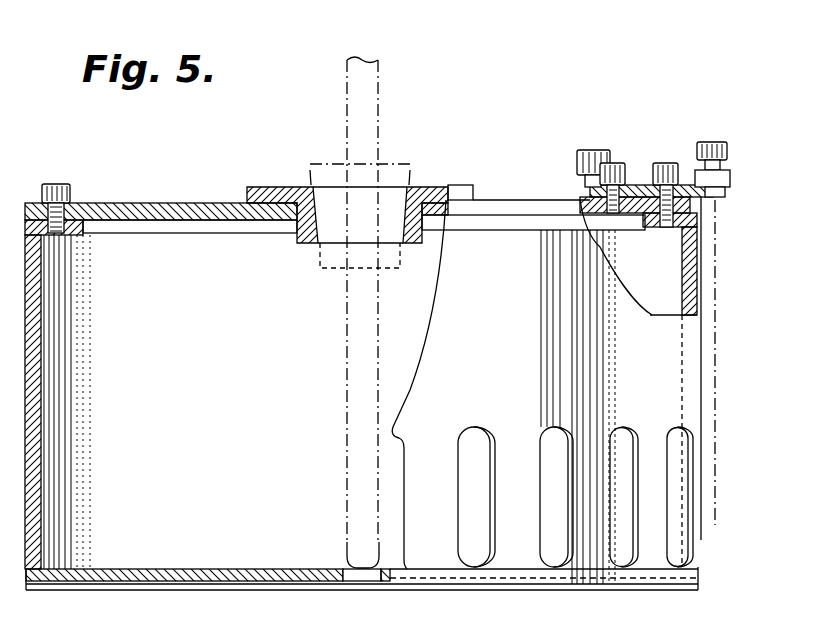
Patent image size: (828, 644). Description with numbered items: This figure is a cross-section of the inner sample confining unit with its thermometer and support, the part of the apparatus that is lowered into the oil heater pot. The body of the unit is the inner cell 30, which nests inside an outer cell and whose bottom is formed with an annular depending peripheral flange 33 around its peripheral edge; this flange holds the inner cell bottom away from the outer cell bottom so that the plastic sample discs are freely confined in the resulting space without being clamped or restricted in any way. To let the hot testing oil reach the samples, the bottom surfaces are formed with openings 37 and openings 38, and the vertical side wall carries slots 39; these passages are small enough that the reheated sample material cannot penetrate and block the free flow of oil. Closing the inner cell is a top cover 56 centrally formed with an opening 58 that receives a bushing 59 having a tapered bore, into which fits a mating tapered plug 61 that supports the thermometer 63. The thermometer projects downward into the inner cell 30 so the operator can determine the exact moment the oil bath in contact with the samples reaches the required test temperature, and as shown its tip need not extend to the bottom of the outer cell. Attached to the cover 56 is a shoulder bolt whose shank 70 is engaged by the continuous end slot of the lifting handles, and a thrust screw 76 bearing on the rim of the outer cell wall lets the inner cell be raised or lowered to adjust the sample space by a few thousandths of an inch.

The inner cell 30 is at (258, 494).
The annular depending peripheral flange 33 is at (34, 594).
The openings 37 is at (197, 585).
The openings 38 is at (148, 569).
The slots 39 is at (548, 447).
The top cover 56 is at (160, 203).
The opening 58 is at (412, 190).
The bushing 59 is at (313, 248).
The tapered plug 61 is at (400, 268).
The thermometer 63 is at (345, 380).
The shank 70 is at (583, 192).
The screw 76 is at (725, 150).